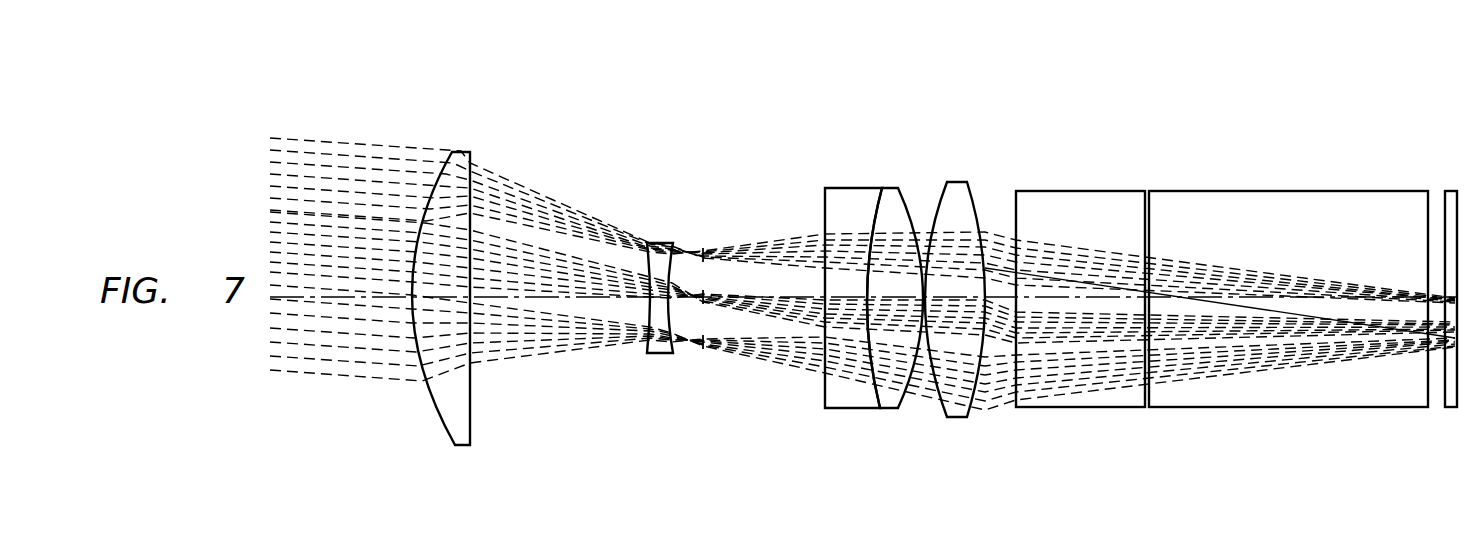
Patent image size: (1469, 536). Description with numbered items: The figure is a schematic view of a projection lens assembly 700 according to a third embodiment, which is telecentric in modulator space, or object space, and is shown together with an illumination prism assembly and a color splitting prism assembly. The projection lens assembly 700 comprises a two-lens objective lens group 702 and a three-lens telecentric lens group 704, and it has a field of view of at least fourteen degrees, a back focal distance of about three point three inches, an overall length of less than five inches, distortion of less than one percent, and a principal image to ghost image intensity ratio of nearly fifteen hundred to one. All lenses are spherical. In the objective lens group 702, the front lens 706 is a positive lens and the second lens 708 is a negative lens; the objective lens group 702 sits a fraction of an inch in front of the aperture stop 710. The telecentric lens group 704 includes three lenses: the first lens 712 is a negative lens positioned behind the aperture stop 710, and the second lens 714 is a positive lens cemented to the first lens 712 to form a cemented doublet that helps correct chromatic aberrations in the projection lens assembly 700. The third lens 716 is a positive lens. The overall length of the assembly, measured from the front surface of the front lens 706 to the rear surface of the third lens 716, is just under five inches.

The projection lens assembly 700 is at (980, 87).
The objective lens group 702 is at (670, 137).
The telecentric lens group 704 is at (825, 137).
The front lens 706 is at (435, 410).
The second lens 708 is at (662, 354).
The aperture stop 710 is at (703, 348).
The first lens 712 is at (850, 412).
The second lens 714 is at (890, 412).
The third lens 716 is at (957, 418).